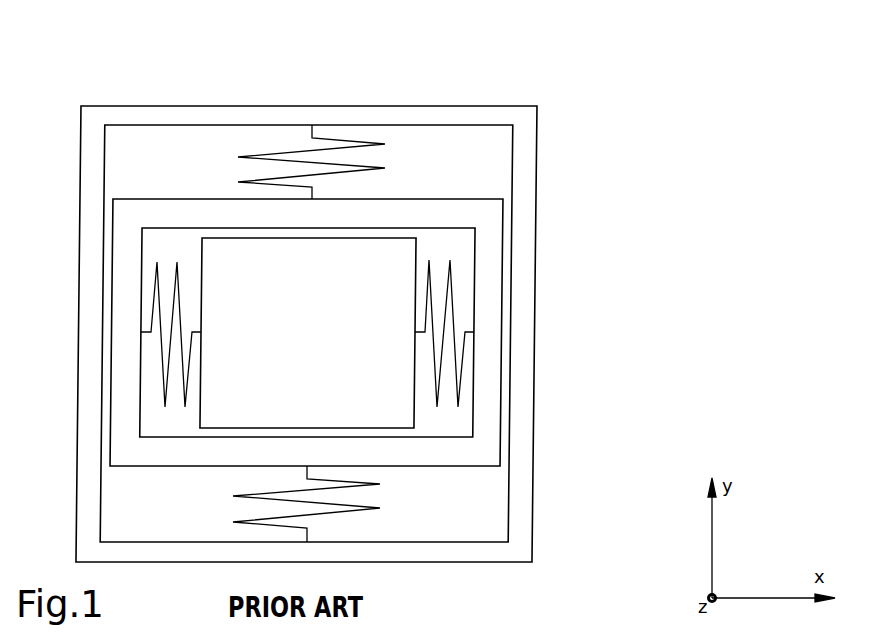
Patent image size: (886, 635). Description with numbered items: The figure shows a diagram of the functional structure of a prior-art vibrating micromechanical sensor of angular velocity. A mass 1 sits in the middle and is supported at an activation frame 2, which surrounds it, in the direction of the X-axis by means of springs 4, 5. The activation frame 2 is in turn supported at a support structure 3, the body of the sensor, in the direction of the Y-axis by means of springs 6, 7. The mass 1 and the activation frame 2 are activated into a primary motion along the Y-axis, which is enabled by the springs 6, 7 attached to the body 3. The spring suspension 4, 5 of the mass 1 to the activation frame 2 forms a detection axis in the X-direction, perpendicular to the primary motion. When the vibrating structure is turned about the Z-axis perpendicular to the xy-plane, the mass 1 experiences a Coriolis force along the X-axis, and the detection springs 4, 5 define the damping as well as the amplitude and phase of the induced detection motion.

The mass 1 is at (416, 257).
The activation frame 2 is at (458, 198).
The support structure 3 is at (500, 105).
The spring 4 is at (157, 270).
The spring 5 is at (453, 285).
The spring 6 is at (360, 142).
The spring 7 is at (357, 505).